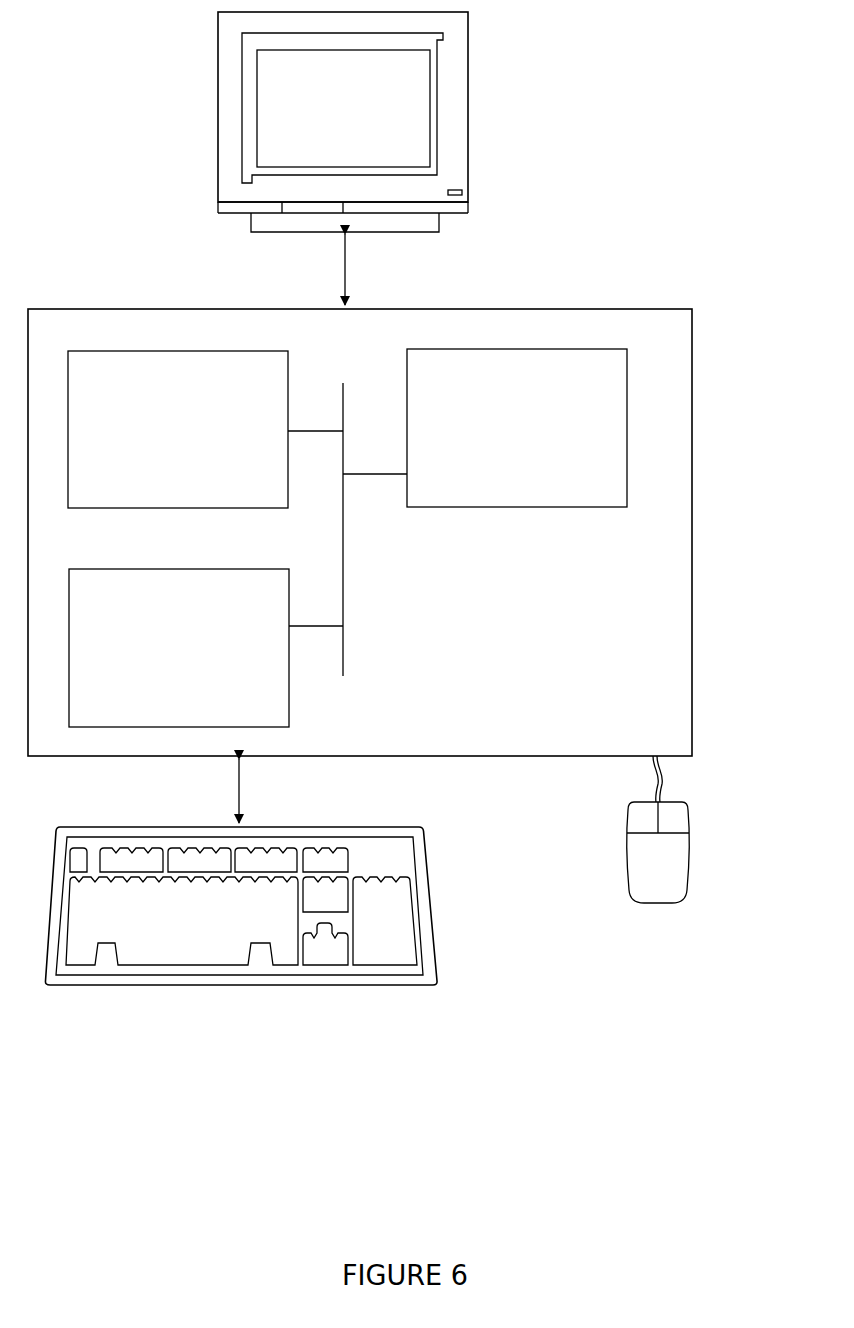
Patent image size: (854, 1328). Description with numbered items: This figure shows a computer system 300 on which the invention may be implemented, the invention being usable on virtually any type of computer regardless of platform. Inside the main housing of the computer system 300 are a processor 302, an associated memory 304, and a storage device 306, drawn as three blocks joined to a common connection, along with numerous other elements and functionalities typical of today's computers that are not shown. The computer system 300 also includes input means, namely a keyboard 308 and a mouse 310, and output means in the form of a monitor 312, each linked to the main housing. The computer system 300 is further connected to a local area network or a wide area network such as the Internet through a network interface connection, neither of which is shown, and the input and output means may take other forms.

The computer system 300 is at (667, 176).
The processor 302 is at (512, 438).
The memory 304 is at (158, 443).
The storage device 306 is at (158, 661).
The keyboard 308 is at (155, 945).
The mouse 310 is at (638, 873).
The monitor 312 is at (322, 123).